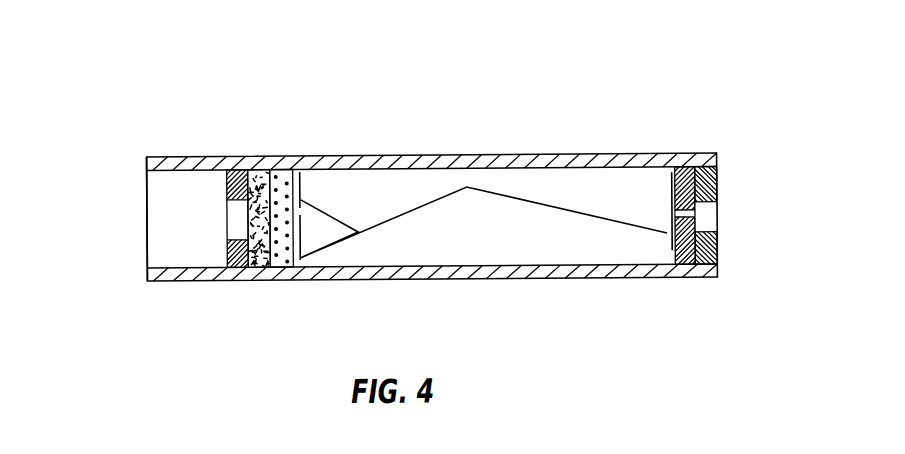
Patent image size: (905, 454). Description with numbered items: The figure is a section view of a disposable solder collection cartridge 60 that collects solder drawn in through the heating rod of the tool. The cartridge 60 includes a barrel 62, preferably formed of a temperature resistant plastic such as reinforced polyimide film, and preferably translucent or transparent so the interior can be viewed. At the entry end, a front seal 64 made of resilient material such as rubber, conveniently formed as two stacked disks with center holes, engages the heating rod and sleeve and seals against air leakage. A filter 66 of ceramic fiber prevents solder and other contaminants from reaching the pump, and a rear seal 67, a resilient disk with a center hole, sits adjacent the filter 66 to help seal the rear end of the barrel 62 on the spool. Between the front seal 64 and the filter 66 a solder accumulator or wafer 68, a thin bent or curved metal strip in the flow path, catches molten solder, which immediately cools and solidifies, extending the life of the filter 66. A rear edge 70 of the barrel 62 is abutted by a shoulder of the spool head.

The solder collection cartridge 60 is at (116, 97).
The barrel 62 is at (447, 157).
The front seal 64 is at (717, 181).
The filter 66 is at (290, 174).
The rear seal 67 is at (224, 181).
The solder accumulator or wafer 68 is at (557, 211).
The rear edge 70 is at (147, 215).